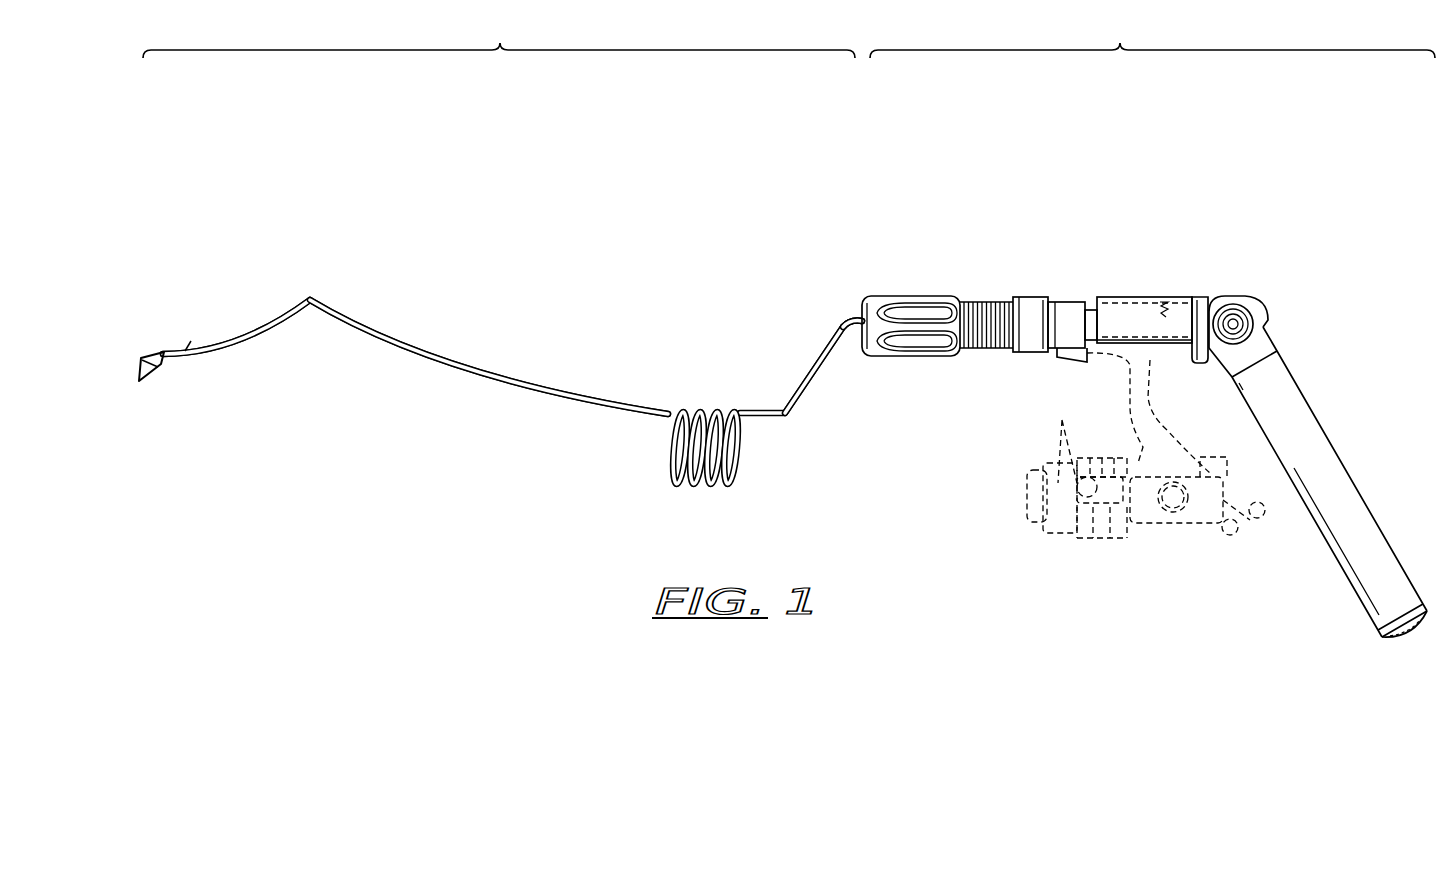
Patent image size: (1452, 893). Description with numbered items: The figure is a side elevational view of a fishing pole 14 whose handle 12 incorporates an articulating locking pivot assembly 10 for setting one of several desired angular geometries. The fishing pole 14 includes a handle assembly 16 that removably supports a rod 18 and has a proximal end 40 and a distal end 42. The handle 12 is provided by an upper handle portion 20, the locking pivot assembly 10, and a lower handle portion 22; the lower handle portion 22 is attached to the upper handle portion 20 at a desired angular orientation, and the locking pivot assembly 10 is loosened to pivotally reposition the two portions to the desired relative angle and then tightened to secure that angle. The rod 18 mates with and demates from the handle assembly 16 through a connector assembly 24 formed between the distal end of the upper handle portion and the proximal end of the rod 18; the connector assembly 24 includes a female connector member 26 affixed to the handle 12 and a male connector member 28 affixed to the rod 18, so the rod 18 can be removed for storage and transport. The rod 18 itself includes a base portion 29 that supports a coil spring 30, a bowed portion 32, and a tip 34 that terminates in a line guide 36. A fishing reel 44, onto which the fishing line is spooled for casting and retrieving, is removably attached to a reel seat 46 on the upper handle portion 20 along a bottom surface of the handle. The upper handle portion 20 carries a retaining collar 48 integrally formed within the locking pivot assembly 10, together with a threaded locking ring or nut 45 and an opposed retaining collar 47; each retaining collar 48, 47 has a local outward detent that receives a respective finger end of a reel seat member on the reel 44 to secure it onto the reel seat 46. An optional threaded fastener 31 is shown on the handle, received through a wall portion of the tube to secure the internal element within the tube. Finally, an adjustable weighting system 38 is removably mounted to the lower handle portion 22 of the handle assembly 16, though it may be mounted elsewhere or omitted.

The locking pivot assembly 10 is at (1257, 298).
The handle 12 is at (1270, 248).
The fishing pole 14 is at (1292, 165).
The handle assembly 16 is at (1152, 38).
The rod 18 is at (499, 38).
The upper handle portion 20 is at (1143, 293).
The lower handle portion 22 is at (1331, 423).
The connector assembly 24 is at (880, 380).
The female connector member 26 is at (914, 292).
The male connector member 28 is at (851, 310).
The base portion 29 is at (817, 363).
The coil spring 30 is at (697, 487).
The fastener 31 is at (1175, 300).
The bowed portion 32 is at (572, 407).
The tip 34 is at (231, 341).
The line guide 36 is at (160, 362).
The weighting system 38 is at (1346, 645).
The proximal end 40 is at (1432, 600).
The distal end 42 is at (900, 368).
The fishing reel 44 is at (1130, 407).
The threaded locking ring 45 is at (1032, 296).
The reel seat 46 is at (1120, 347).
The retaining collar 47 is at (1057, 297).
The retaining collar 48 is at (1195, 363).